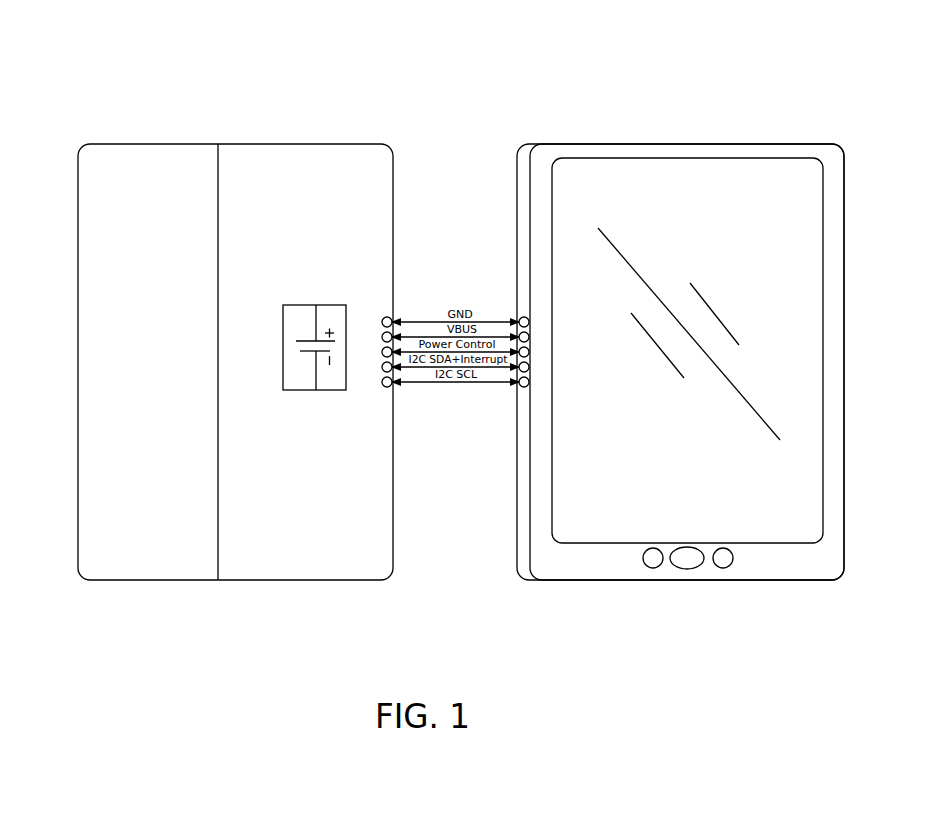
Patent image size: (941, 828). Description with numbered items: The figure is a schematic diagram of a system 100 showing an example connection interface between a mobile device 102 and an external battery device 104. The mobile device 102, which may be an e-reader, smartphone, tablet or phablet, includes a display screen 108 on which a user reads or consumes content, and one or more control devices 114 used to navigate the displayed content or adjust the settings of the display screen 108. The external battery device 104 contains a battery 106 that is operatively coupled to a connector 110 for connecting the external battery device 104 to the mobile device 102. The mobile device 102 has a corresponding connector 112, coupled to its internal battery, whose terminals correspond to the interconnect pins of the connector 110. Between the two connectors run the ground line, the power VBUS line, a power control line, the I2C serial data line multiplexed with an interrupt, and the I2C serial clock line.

The system 100 is at (863, 82).
The mobile device 102 is at (755, 144).
The external battery device 104 is at (312, 144).
The battery 106 is at (300, 305).
The display screen 108 is at (823, 269).
The connector 110 is at (385, 316).
The connector 112 is at (523, 316).
The control devices 114 is at (696, 568).